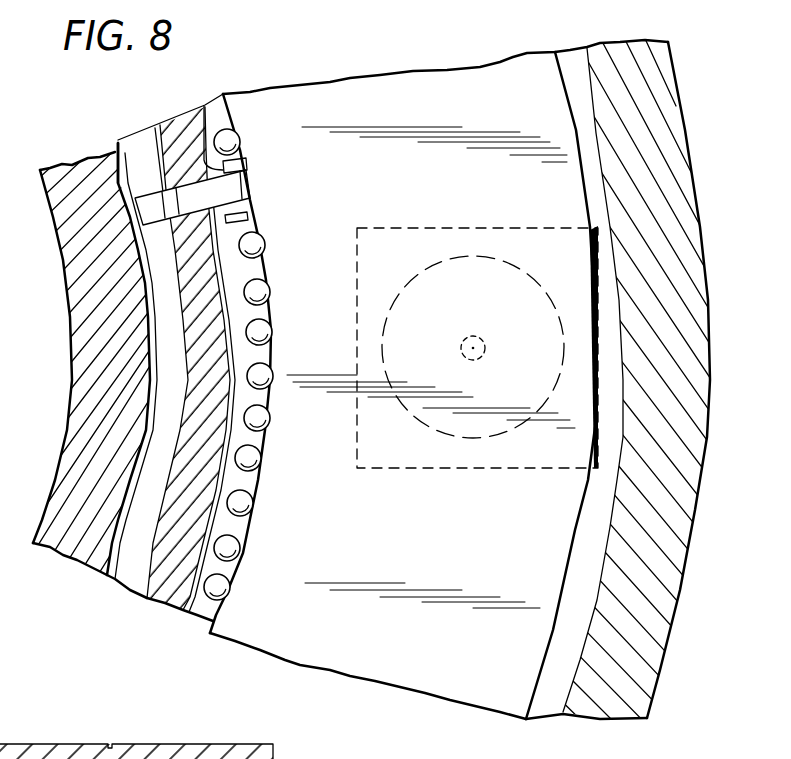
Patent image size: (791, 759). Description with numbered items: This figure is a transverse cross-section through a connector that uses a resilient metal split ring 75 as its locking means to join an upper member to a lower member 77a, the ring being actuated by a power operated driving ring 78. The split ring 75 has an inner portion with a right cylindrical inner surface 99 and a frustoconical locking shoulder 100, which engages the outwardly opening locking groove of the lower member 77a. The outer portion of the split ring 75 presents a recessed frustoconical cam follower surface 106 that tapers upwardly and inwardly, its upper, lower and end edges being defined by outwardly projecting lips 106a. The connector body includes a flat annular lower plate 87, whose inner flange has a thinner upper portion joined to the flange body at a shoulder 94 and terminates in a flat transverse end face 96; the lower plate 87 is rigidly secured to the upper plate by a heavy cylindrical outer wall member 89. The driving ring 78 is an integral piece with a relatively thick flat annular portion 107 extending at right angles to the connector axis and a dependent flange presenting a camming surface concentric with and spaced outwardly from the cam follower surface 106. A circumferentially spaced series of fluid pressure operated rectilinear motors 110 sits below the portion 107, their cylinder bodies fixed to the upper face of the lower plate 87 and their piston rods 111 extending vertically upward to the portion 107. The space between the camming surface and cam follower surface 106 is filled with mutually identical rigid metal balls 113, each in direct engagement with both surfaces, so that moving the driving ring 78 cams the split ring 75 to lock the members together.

The split ring 75 is at (163, 602).
The lower member 77a is at (75, 560).
The driving ring 78 is at (388, 685).
The lower plate 87 is at (551, 704).
The outer wall member 89 is at (650, 680).
The shoulder 94 is at (218, 198).
The end face 96 is at (176, 196).
The inner surface 99 is at (147, 413).
The locking shoulder 100 is at (157, 243).
The cam follower surface 106 is at (213, 126).
The lips 106a is at (247, 215).
The flat annular portion 107 is at (510, 647).
The rectilinear motors 110 is at (480, 442).
The piston rods 111 is at (477, 360).
The balls 113 is at (269, 254).